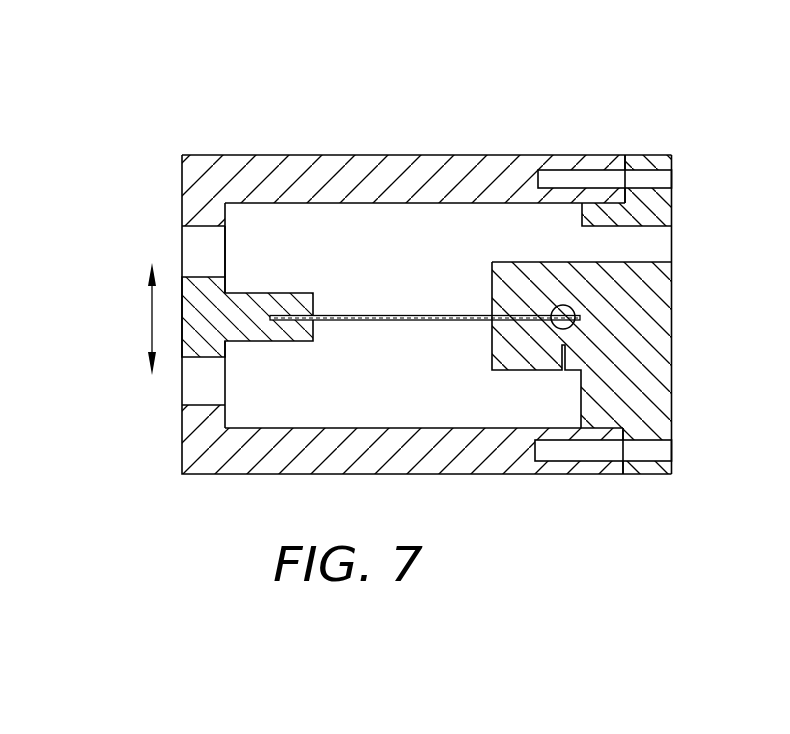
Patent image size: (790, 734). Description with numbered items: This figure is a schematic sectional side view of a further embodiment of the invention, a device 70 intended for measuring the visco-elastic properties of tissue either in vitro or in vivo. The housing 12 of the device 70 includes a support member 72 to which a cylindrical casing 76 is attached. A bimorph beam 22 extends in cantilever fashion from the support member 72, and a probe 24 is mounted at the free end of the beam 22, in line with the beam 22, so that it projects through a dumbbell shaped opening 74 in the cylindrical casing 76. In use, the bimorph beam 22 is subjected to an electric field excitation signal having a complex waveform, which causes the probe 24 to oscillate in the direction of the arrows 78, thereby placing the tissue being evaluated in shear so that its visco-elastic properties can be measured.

The device 70 is at (401, 256).
The housing 12 is at (427, 267).
The cylindrical casing 76 is at (457, 155).
The dumbbell shaped opening 74 is at (195, 245).
The arrows 78 is at (150, 321).
The probe 24 is at (181, 369).
The beam 22 is at (400, 321).
The support member 72 is at (672, 353).